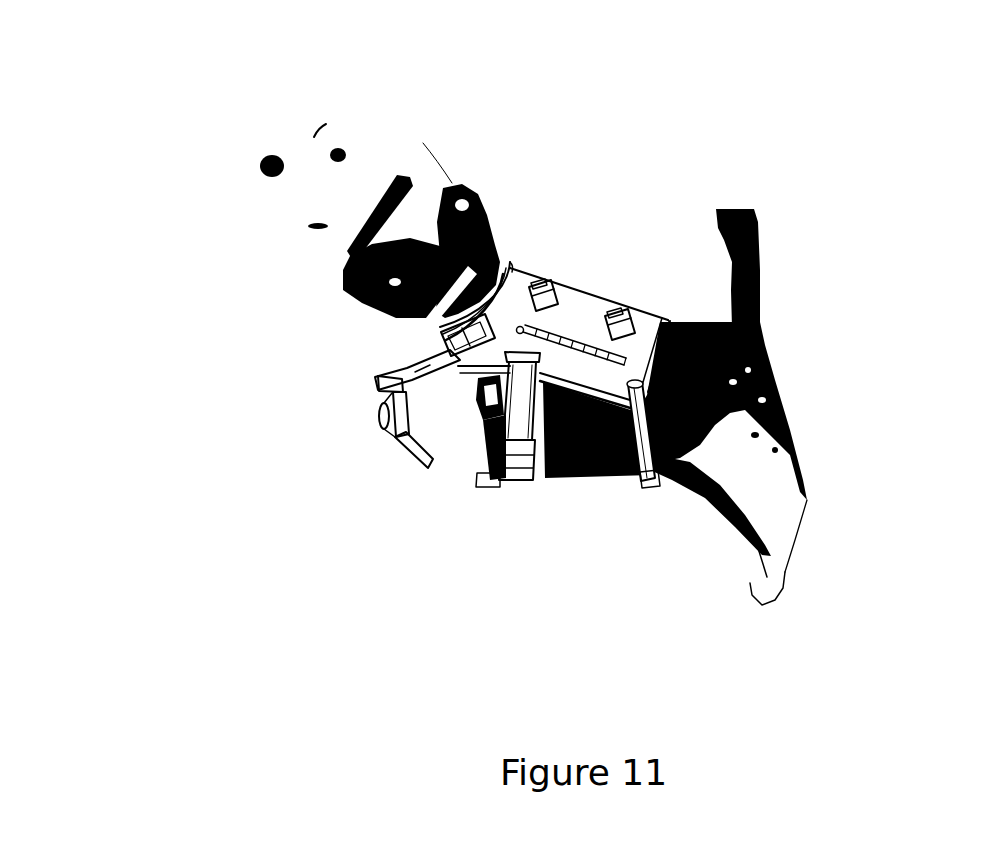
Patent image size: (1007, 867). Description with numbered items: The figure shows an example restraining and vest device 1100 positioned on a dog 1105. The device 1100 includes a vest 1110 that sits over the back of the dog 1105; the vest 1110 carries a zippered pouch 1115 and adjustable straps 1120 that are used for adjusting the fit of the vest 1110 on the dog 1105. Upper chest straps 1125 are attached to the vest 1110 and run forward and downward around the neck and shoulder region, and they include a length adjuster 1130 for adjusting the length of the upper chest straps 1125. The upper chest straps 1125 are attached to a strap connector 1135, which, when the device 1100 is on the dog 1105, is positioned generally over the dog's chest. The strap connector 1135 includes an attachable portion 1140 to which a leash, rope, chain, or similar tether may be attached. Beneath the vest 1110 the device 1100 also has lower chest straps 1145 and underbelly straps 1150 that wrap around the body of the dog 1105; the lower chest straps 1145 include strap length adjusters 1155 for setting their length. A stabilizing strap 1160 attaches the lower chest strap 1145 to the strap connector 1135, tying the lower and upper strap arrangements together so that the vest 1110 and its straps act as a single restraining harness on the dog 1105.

The restraining and vest device 1100 is at (686, 110).
The dog 1105 is at (748, 416).
The vest 1110 is at (510, 268).
The zippered pouch 1115 is at (580, 338).
The adjustable straps 1120 is at (543, 284).
The upper chest straps 1125 is at (418, 359).
The length adjuster 1130 is at (445, 326).
The strap connector 1135 is at (379, 381).
The attachable portion 1140 is at (390, 430).
The lower chest straps 1145 is at (522, 407).
The underbelly straps 1150 is at (650, 457).
The strap length adjusters 1155 is at (533, 453).
The stabilizing strap 1160 is at (407, 467).